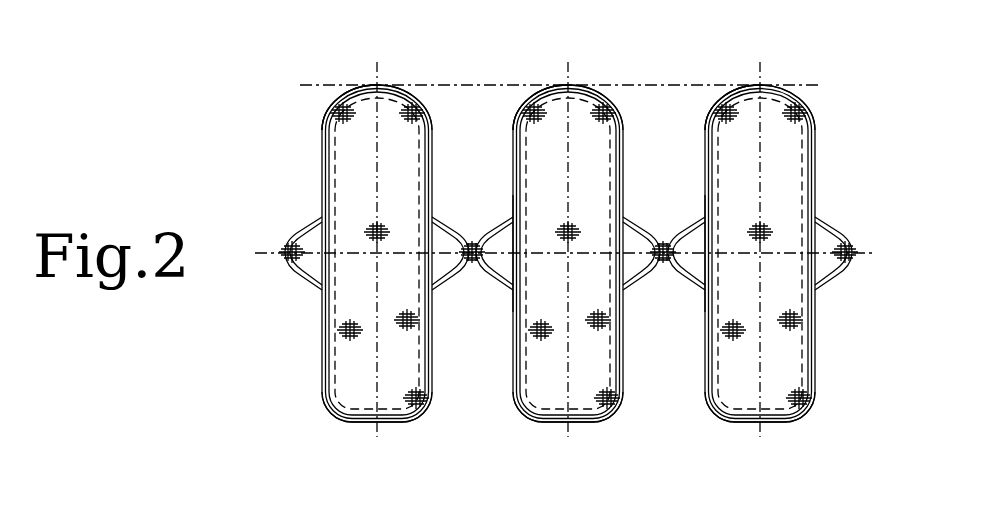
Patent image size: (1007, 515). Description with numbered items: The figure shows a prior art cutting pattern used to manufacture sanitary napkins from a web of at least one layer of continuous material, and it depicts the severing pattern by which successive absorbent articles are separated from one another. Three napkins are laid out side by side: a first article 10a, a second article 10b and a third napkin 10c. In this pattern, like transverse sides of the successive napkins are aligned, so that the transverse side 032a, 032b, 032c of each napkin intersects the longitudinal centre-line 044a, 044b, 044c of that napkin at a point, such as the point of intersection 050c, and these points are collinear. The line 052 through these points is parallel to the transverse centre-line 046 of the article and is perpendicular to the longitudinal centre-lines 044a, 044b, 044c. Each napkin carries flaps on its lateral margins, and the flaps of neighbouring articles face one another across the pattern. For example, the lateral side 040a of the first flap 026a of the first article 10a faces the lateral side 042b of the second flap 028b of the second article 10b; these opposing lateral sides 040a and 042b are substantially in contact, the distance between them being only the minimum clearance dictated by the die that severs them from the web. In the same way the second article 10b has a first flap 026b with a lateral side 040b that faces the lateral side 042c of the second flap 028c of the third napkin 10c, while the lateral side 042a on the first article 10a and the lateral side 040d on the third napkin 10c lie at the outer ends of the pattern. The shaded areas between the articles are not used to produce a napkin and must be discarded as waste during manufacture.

The first article 10a is at (760, 276).
The second article 10b is at (568, 276).
The napkin 10c is at (352, 424).
The first flap 026a is at (703, 298).
The first flap 026b is at (512, 300).
The second flap 028b is at (632, 226).
The second flap 028c is at (442, 226).
The transverse side 032a is at (735, 84).
The transverse side 032b is at (541, 84).
The transverse side 032c is at (349, 84).
The lateral side 040a is at (663, 272).
The lateral side 040b is at (472, 272).
The lateral side 040d is at (272, 270).
The lateral side 042a is at (856, 261).
The lateral side 042b is at (663, 240).
The lateral side 042c is at (472, 240).
The longitudinal centre-line 044a is at (760, 423).
The longitudinal centre-line 044b is at (568, 423).
The longitudinal centre-line 044c is at (377, 423).
The transverse centre-line 046 is at (566, 253).
The point of intersection 050c is at (380, 84).
The line 052 is at (557, 85).